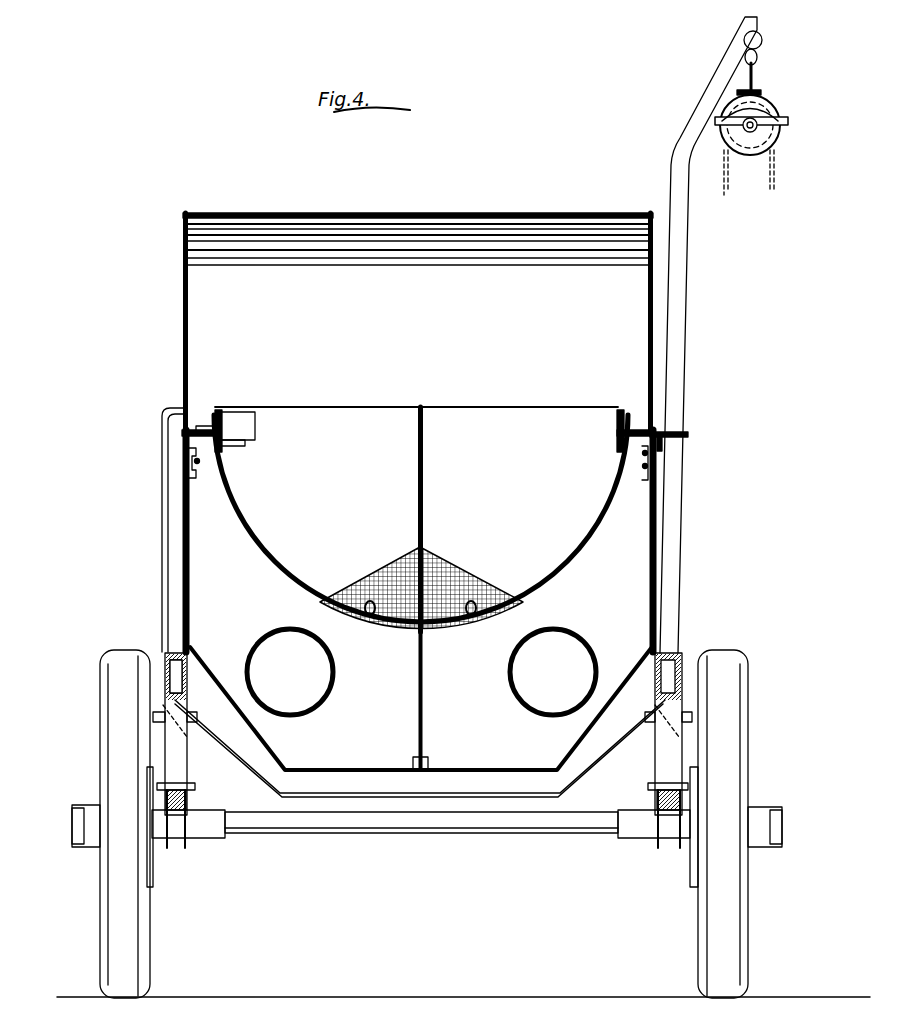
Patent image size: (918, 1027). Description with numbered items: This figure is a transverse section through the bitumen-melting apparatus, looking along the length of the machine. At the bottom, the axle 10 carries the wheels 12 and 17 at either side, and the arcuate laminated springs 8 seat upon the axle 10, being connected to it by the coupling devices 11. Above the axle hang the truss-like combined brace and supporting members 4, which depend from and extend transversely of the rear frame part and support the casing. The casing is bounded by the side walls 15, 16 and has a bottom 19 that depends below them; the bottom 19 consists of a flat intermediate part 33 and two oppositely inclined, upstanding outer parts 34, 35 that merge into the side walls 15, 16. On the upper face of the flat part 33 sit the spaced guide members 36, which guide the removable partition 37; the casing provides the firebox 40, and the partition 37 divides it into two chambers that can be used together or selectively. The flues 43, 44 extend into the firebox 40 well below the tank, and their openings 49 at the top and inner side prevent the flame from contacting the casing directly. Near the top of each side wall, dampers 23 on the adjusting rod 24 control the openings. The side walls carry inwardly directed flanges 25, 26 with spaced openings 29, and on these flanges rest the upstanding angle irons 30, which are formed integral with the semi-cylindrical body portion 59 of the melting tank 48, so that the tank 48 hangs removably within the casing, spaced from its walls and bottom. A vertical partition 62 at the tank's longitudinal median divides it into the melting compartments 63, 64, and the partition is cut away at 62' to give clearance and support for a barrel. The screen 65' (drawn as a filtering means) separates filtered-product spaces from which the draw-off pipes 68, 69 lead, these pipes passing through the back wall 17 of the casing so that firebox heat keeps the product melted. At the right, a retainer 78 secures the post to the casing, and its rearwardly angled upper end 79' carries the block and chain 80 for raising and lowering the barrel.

The combined brace and supporting member 4 is at (407, 792).
The arcuate spring 8 is at (196, 790).
The axle 10 is at (298, 836).
The coupling device 11 is at (240, 425).
The wheel 12 is at (108, 694).
The side wall 15 is at (190, 572).
The side wall 16 is at (650, 555).
The back wall 17 is at (728, 713).
The bottom 19 is at (680, 520).
The damper 23 is at (190, 460).
The adjusting rod 24 is at (193, 465).
The flange 25 is at (221, 445).
The flange 26 is at (624, 444).
The opening 29 is at (210, 428).
The angle iron 30 is at (224, 430).
The flat intermediate part 33 is at (480, 768).
The inclined outer part 34 is at (268, 748).
The inclined outer part 35 is at (570, 748).
The guide member 36 is at (430, 762).
The removable partition 37 is at (423, 700).
The firebox 40 is at (296, 630).
The flue 43 is at (250, 642).
The flue 44 is at (580, 642).
The melting tank 48 is at (277, 550).
The flue opening 49 is at (515, 655).
The body portion 59 is at (583, 535).
The partition 62 is at (446, 519).
The cut-away 62' is at (445, 395).
The melting compartment 63 is at (350, 475).
The melting compartment 64 is at (522, 460).
The screen 65' is at (421, 572).
The draw-off pipe 68 is at (370, 590).
The draw-off pipe 69 is at (472, 592).
The retainer 78 is at (688, 434).
The angularly disposed upper end 79' is at (677, 80).
The block and chain 80 is at (762, 118).